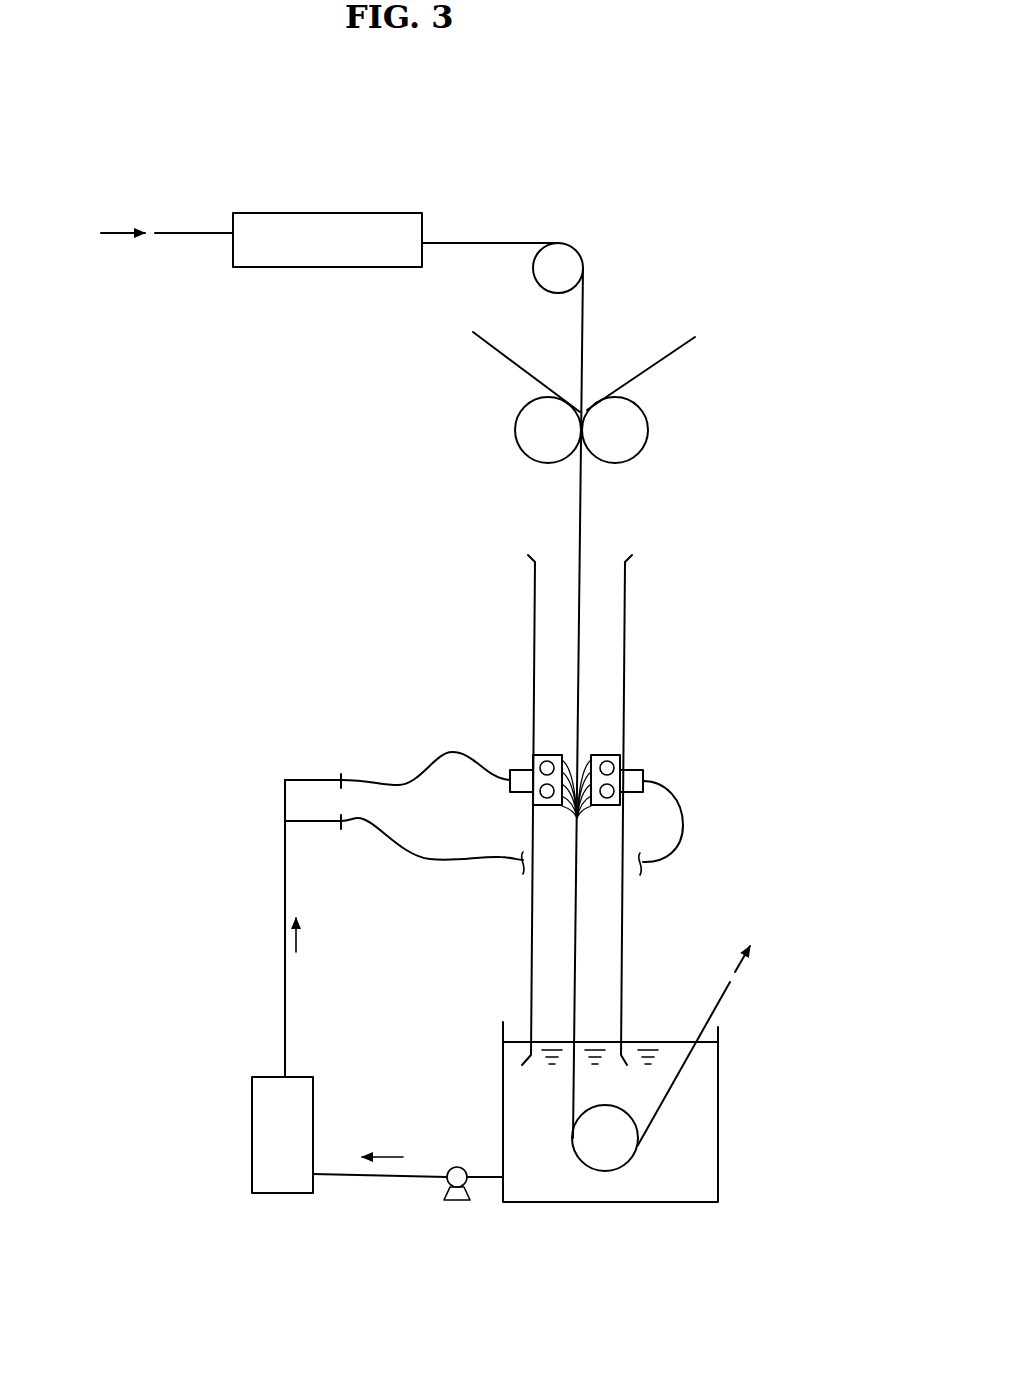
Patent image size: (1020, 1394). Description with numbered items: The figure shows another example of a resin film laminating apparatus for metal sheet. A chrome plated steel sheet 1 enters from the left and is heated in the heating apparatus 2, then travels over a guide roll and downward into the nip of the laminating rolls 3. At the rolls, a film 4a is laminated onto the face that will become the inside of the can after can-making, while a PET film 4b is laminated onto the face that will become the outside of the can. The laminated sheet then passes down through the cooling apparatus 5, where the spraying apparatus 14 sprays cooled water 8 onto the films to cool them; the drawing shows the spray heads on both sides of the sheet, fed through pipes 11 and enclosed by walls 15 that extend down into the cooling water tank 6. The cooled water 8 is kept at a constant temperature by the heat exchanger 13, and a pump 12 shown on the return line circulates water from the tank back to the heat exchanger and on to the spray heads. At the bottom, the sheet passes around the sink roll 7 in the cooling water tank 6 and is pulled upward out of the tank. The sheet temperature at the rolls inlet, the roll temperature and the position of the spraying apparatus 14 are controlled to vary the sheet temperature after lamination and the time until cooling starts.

The chrome plated steel sheet 1 is at (185, 237).
The heating apparatus 2 is at (325, 267).
The laminating rolls 3 is at (523, 455).
The film 4a is at (673, 353).
The PET film 4b is at (492, 350).
The cooling apparatus 5 is at (511, 810).
The cooling water tank 6 is at (663, 1132).
The sink roll 7 is at (600, 1172).
The cooled water 8 is at (677, 1187).
The supply pipe 11 is at (530, 760).
The pump 12 is at (457, 1200).
The heat exchanger 13 is at (252, 1120).
The spraying apparatus 14 is at (540, 736).
The casing wall 15 is at (533, 610).